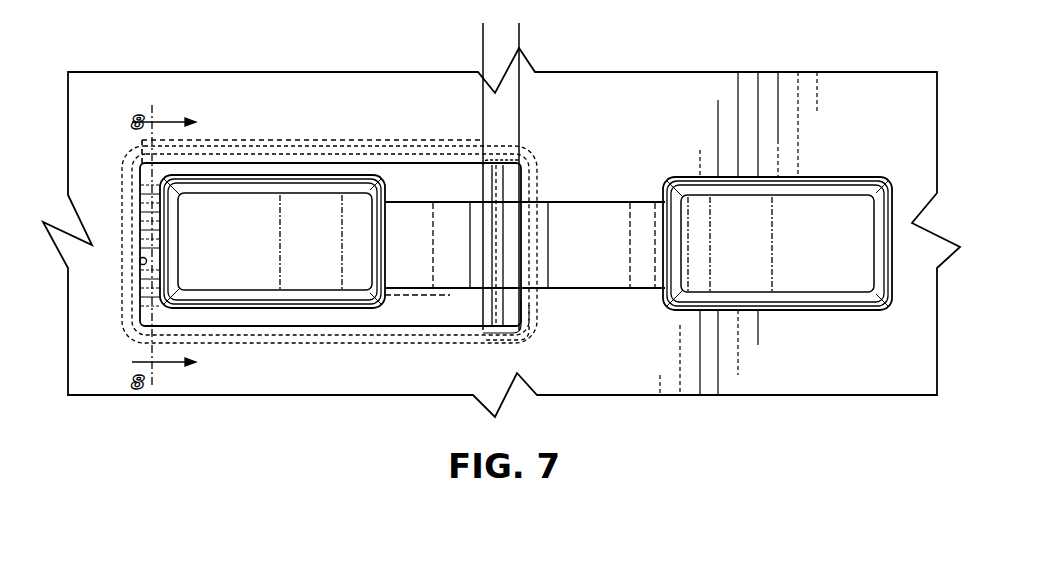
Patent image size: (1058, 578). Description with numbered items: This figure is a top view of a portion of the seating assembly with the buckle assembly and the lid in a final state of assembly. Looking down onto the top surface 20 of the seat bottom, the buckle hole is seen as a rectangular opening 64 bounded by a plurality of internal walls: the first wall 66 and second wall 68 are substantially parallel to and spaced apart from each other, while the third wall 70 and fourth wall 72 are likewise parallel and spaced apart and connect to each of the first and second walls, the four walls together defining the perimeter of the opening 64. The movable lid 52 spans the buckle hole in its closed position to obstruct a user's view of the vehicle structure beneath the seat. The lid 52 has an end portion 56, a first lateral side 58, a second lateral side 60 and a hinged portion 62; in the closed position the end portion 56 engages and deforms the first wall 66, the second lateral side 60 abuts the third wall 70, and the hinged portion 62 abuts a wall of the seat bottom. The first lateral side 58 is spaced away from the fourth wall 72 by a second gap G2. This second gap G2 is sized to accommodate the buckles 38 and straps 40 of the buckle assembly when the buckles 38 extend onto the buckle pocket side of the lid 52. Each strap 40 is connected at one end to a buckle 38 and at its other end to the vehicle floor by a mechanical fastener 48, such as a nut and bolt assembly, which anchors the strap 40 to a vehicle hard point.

The top surface 20 is at (609, 374).
The buckle 38 is at (243, 254).
The strap 40 is at (477, 218).
The mechanical fastener 48 is at (523, 297).
The lid 52 is at (407, 315).
The end portion 56 is at (306, 140).
The first lateral side 58 is at (492, 322).
The second lateral side 60 is at (140, 203).
The hinged portion 62 is at (316, 328).
The opening 64 is at (250, 330).
The first wall 66 is at (417, 163).
The second wall 68 is at (458, 315).
The third wall 70 is at (139, 261).
The fourth wall 72 is at (513, 178).
The second gap G2 is at (435, 31).